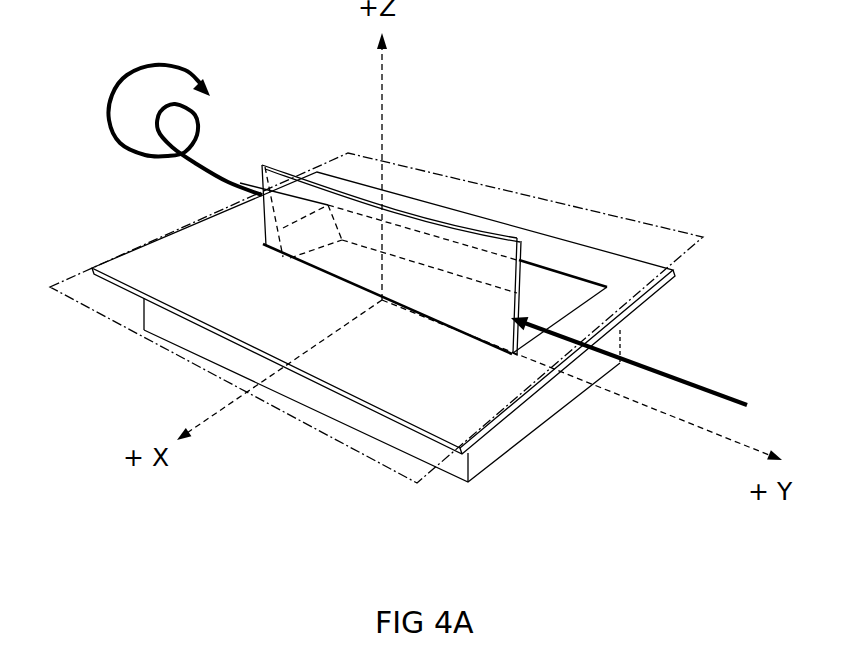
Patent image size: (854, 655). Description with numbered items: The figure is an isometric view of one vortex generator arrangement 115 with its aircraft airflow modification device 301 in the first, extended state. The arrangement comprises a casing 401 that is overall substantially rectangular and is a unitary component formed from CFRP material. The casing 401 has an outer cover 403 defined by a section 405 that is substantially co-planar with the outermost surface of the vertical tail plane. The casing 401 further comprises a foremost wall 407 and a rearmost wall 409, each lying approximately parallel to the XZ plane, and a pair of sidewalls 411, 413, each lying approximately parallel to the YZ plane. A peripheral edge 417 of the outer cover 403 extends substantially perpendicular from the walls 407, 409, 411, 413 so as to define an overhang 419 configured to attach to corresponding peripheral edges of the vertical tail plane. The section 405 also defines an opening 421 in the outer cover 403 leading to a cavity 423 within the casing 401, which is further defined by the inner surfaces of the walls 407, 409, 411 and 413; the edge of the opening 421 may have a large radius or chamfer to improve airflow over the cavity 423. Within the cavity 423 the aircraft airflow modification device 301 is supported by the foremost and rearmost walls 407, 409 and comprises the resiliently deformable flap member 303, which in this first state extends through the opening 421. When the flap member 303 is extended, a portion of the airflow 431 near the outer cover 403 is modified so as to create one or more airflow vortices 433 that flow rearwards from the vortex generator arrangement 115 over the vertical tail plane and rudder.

The vortex generator arrangement 115 is at (500, 87).
The aircraft airflow modification device 301 is at (288, 162).
The resiliently deformable flap member 303 is at (412, 287).
The casing 401 is at (468, 482).
The outer cover 403 is at (390, 345).
The section 405 is at (468, 180).
The foremost wall 407 is at (550, 402).
The rearmost wall 409 is at (240, 183).
The sidewall 411 is at (318, 400).
The sidewall 413 is at (532, 270).
The peripheral edge 417 is at (489, 226).
The overhang 419 is at (602, 252).
The opening 421 is at (607, 287).
The cavity 423 is at (543, 313).
The airflow 431 is at (683, 375).
The airflow vortices 433 is at (120, 80).